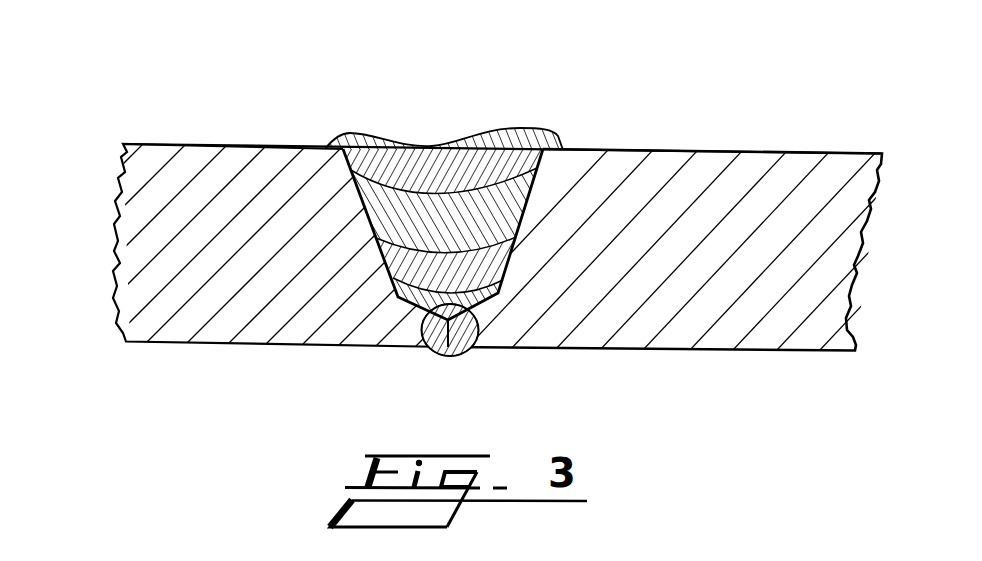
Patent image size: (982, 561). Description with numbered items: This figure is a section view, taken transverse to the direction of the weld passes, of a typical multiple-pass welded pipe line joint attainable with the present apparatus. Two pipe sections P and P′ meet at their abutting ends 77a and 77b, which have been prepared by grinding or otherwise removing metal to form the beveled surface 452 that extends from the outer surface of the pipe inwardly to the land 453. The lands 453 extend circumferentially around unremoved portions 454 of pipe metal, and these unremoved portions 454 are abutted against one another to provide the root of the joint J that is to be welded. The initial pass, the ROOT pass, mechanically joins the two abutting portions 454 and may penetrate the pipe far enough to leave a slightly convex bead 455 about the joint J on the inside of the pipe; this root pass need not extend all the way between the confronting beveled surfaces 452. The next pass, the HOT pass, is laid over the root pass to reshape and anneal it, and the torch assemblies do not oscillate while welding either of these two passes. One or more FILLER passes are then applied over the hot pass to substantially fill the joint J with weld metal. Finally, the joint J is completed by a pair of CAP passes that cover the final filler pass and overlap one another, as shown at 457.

The pipe section P is at (364, 225).
The pipe section P' is at (685, 231).
The abutting end 77a is at (247, 145).
The abutting end 77b is at (725, 153).
The joint J is at (502, 220).
The cap pass CAP is at (450, 98).
The overlap of cap passes 457 is at (470, 138).
The beveled surface 452 is at (568, 170).
The filler pass FILLER is at (500, 207).
The hot pass HOT is at (504, 326).
The land 453 is at (493, 302).
The root pass ROOT is at (424, 349).
The unremoved portion 454 is at (461, 349).
The convex bead 455 is at (433, 328).